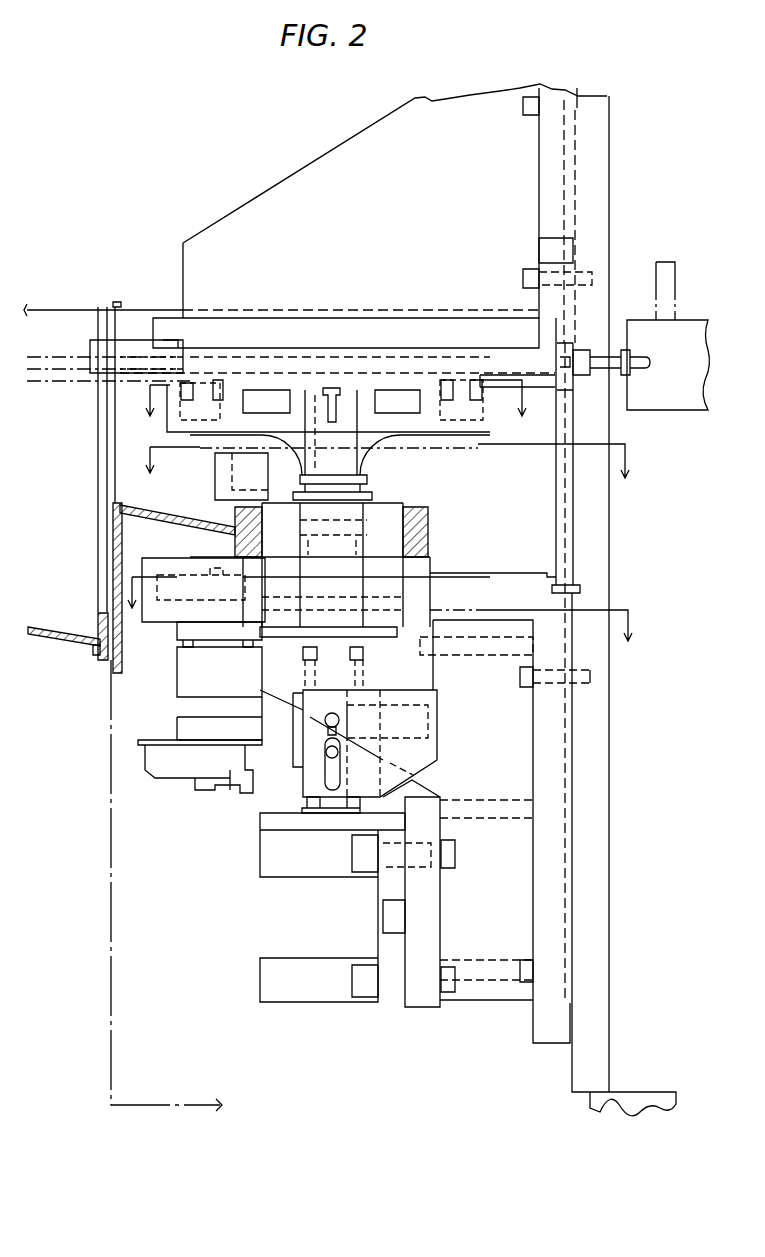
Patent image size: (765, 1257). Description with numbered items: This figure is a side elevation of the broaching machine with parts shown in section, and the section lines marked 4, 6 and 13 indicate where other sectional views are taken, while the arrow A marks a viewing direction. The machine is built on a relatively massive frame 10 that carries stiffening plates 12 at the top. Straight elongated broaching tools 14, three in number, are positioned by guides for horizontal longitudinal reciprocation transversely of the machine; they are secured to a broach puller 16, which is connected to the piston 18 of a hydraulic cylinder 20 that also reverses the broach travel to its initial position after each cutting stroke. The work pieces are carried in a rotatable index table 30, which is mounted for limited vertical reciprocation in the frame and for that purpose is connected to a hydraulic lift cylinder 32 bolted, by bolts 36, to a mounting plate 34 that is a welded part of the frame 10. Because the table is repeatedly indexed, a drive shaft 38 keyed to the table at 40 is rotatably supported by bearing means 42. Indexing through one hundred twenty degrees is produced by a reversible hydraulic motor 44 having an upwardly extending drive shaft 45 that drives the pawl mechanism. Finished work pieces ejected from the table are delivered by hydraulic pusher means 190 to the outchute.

The frame 10 is at (612, 722).
The stiffening plates 12 is at (198, 257).
The section line 13 is at (383, 624).
The broaching tools 14 is at (138, 337).
The broach puller 16 is at (583, 347).
The piston 18 is at (616, 348).
The hydraulic cylinder 20 is at (688, 403).
The rotatable index table 30 is at (390, 442).
The hydraulic lift cylinder 32 is at (262, 930).
The mounting plate 34 is at (433, 932).
The bolts 36 is at (455, 850).
The drive shaft 38 is at (378, 483).
The key 40 is at (305, 419).
The bearing means 42 is at (362, 657).
The reversible hydraulic motor 44 is at (198, 648).
The drive shaft 45 is at (222, 638).
The hydraulic pusher means 190 is at (172, 640).
The section line 4 is at (332, 400).
The section line 6 is at (389, 465).
The direction arrow A is at (266, 169).